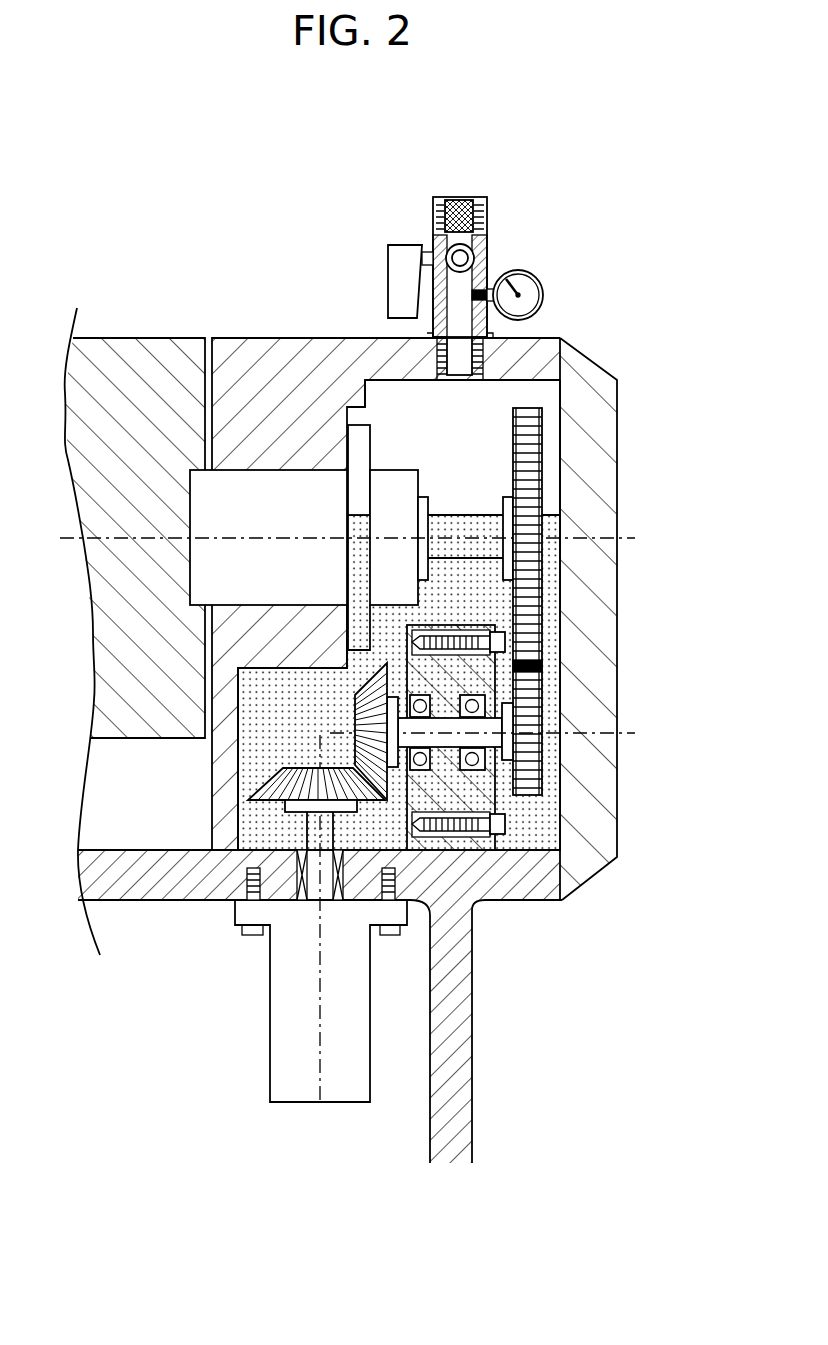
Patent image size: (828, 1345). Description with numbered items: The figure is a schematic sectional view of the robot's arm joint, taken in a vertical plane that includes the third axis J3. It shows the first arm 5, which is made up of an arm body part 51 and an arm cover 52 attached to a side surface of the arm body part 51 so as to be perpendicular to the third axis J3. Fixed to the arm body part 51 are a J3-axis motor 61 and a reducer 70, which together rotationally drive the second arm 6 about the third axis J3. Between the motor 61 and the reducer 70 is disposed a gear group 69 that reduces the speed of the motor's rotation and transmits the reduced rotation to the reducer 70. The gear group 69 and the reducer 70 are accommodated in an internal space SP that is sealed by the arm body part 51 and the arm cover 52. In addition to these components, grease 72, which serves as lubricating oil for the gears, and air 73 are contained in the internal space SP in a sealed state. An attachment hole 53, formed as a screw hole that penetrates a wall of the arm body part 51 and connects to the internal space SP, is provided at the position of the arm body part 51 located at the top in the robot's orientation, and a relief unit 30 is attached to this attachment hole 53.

The second arm 6 is at (126, 338).
The reducer 70 is at (275, 490).
The air 73 is at (412, 420).
The attachment hole 53 is at (530, 352).
The internal space SP is at (505, 399).
The gear group 69 is at (548, 493).
The third axis J3 is at (365, 538).
The relief unit 30 is at (505, 208).
The grease 72 is at (250, 757).
The J3-axis motor 61 is at (303, 1102).
The arm body part 51 is at (525, 900).
The arm cover 52 is at (592, 878).
The first arm 5 is at (647, 983).